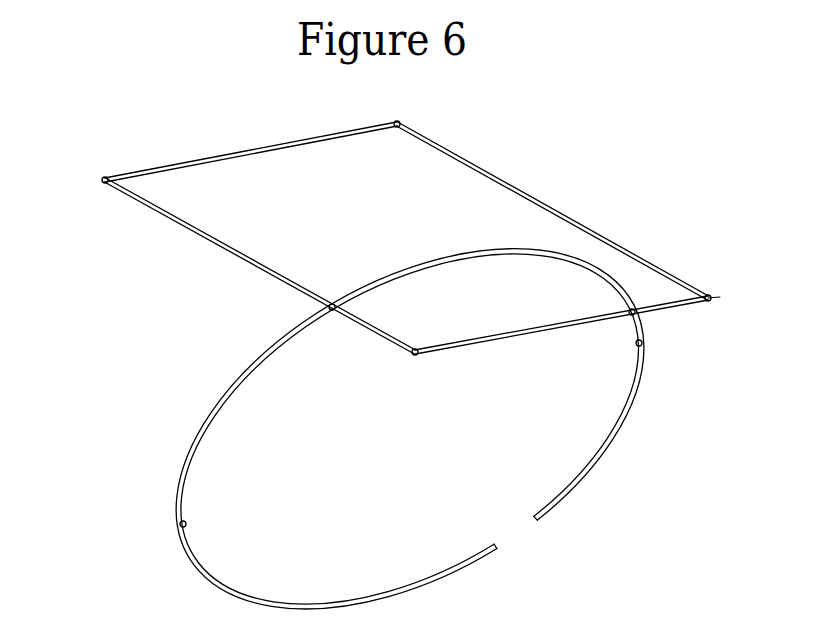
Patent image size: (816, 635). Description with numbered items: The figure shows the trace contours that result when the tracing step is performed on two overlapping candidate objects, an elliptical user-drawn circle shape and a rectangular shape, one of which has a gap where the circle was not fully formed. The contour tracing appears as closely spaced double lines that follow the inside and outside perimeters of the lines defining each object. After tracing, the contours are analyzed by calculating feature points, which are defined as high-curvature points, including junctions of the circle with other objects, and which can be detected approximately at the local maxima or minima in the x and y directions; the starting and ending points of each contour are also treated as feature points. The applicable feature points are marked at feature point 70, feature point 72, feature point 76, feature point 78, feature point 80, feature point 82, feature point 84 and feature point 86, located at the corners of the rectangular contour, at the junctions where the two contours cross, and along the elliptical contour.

The feature point 70 is at (400, 124).
The feature point 72 is at (104, 180).
The feature point 76 is at (710, 297).
The feature point 78 is at (329, 307).
The feature point 80 is at (410, 429).
The feature point 82 is at (413, 355).
The feature point 84 is at (180, 524).
The feature point 86 is at (642, 344).